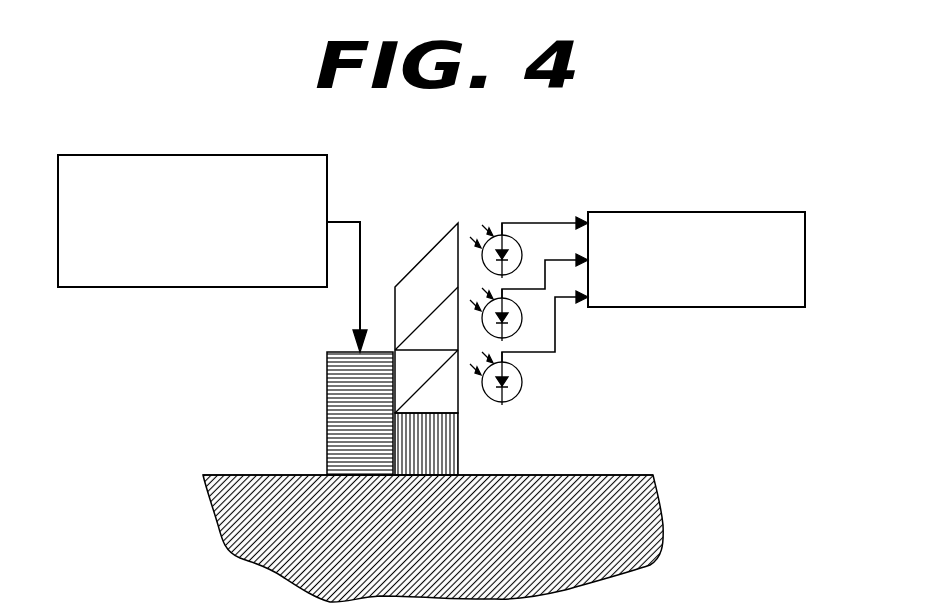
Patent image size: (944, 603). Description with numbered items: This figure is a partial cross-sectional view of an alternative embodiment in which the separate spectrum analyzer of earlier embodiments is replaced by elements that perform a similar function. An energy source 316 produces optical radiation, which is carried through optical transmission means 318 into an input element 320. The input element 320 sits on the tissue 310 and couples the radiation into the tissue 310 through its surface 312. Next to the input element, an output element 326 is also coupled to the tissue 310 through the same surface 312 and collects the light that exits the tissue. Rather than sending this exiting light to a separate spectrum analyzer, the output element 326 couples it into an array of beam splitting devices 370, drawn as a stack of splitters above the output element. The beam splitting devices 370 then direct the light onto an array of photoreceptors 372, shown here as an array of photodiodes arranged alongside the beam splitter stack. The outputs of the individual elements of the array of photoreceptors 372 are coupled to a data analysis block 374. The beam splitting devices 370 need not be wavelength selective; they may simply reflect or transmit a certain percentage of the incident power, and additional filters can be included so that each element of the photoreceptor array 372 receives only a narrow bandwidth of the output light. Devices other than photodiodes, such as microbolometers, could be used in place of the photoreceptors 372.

The tissue 310 is at (662, 527).
The surface 312 is at (620, 475).
The energy source 316 is at (157, 155).
The optical transmission means 318 is at (342, 221).
The input element 320 is at (365, 383).
The output element 326 is at (428, 443).
The array of beam splitting devices 370 is at (441, 212).
The array of photoreceptors 372 is at (514, 232).
The data analysis block 374 is at (732, 232).